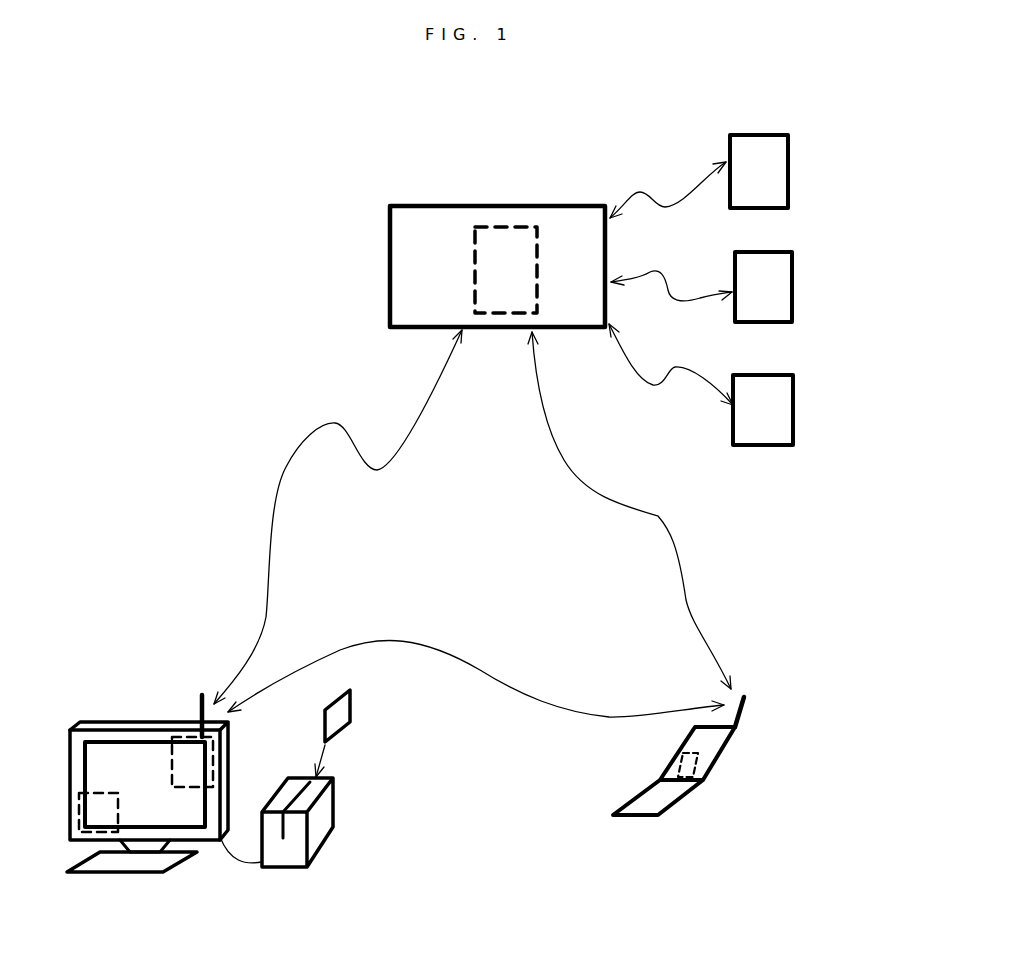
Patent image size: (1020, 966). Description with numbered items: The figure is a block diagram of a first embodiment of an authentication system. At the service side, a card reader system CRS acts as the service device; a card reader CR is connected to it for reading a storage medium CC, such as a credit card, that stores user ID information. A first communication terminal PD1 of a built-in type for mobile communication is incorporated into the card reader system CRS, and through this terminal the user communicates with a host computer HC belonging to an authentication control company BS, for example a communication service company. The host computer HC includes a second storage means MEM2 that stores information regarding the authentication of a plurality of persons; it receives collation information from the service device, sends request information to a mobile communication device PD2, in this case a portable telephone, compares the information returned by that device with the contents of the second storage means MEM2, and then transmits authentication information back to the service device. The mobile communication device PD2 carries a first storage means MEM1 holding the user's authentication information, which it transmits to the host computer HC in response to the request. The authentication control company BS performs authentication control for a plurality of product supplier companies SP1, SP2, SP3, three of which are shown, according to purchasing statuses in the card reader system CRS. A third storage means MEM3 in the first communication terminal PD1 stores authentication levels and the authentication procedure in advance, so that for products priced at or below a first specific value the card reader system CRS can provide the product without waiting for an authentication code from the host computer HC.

The authentication control company BS is at (384, 248).
The host computer HC is at (432, 205).
The second storage means MEM2 is at (533, 227).
The product supplier company SP1 is at (788, 165).
The product supplier company SP2 is at (792, 285).
The product supplier company SP3 is at (793, 415).
The first communication terminal PD1 is at (173, 762).
The third storage means MEM3 is at (100, 793).
The card reader system CRS is at (200, 822).
The storage medium CC is at (352, 710).
The card reader CR is at (333, 825).
The mobile communication device PD2 is at (723, 753).
The first storage means MEM1 is at (672, 762).